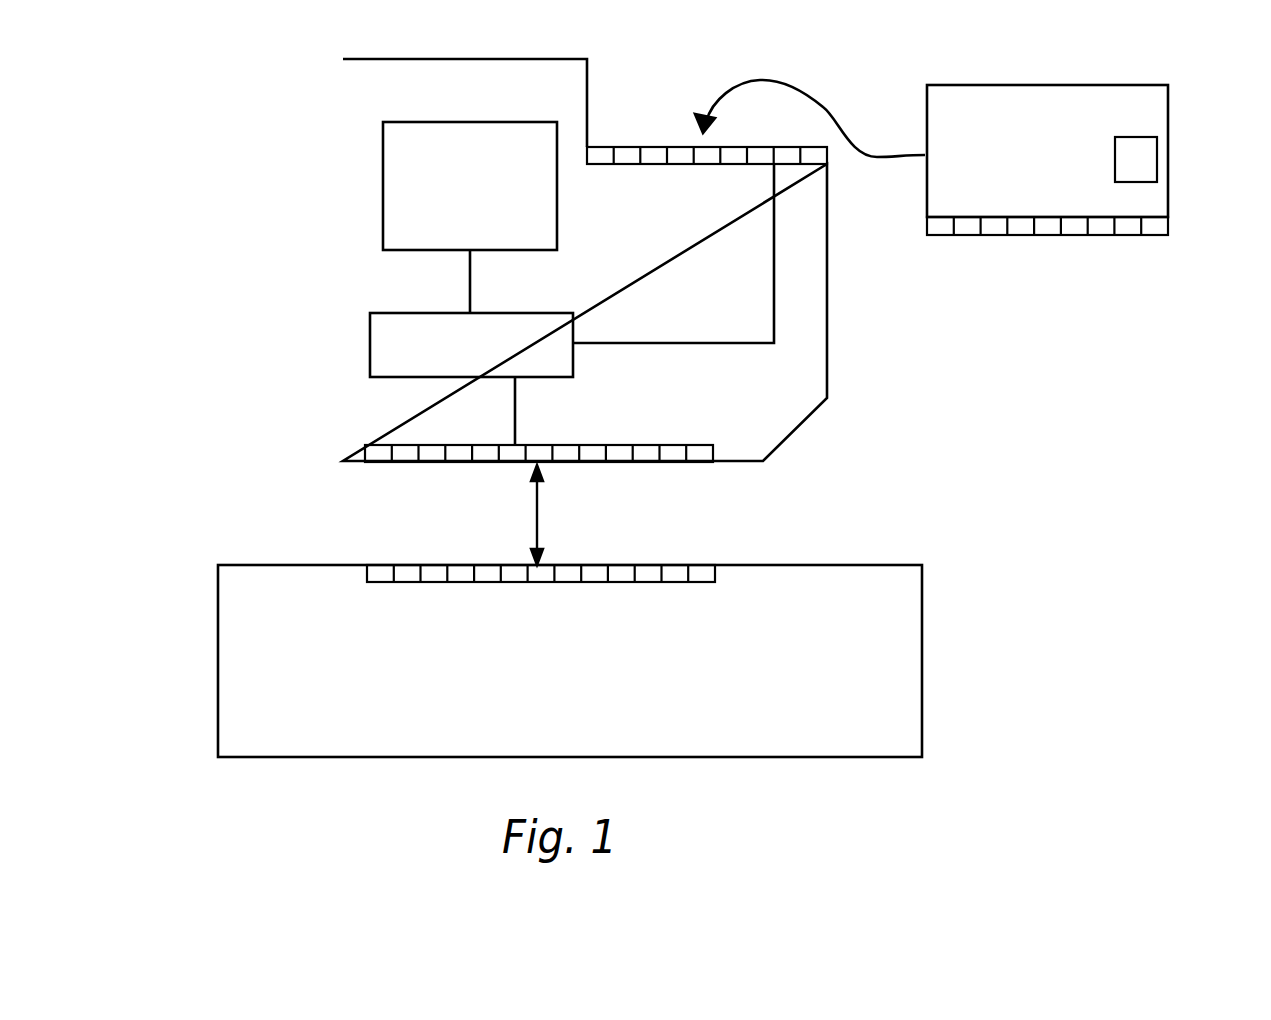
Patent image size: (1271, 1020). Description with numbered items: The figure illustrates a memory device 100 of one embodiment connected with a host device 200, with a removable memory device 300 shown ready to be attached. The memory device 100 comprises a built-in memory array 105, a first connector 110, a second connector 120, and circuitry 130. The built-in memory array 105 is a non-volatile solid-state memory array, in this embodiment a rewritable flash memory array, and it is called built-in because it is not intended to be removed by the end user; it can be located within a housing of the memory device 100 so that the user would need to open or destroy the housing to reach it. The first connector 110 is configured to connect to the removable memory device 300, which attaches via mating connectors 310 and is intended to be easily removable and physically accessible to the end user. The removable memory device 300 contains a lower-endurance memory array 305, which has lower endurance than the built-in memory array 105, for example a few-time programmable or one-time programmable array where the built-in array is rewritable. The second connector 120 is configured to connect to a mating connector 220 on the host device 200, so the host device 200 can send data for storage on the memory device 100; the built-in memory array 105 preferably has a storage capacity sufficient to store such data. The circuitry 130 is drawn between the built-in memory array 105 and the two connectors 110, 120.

The memory device 100 is at (343, 266).
The built-in memory array 105 is at (470, 122).
The first connector 110 is at (670, 165).
The second connector 120 is at (675, 445).
The circuitry 130 is at (522, 313).
The host device 200 is at (218, 665).
The mating connector 220 is at (645, 565).
The removable memory device 300 is at (1045, 85).
The lower-endurance memory array 305 is at (1137, 137).
The mating connectors 310 is at (1047, 235).